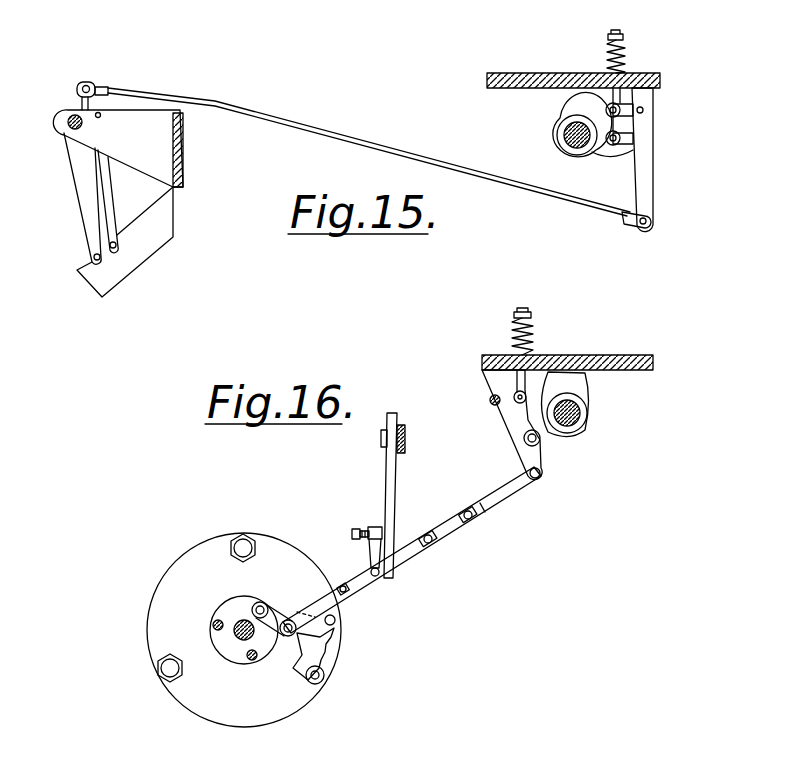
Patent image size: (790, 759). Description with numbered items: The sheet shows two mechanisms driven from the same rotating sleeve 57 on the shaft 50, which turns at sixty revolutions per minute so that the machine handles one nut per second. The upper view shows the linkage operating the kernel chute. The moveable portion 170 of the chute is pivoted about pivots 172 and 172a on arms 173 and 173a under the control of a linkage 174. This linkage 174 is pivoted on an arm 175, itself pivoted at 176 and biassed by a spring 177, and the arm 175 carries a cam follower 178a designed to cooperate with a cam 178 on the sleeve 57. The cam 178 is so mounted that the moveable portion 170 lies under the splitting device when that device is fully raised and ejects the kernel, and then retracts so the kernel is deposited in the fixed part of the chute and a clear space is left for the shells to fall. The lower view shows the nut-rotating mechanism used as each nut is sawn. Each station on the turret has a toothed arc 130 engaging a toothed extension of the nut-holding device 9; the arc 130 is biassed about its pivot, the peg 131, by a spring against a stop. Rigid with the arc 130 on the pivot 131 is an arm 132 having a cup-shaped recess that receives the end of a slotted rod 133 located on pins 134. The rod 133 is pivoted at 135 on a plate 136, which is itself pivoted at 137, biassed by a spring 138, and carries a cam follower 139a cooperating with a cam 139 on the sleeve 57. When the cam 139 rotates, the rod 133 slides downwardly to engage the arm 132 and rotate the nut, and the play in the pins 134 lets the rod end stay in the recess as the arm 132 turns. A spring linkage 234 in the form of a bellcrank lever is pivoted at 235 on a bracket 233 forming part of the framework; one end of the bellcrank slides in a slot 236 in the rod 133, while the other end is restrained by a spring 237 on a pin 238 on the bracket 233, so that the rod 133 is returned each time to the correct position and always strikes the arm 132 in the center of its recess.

In FIG. 15, the moveable portion of chute 170 is at (102, 277).
In FIG. 15, the pivot 172 is at (73, 118).
In FIG. 15, the pivot 172a is at (100, 114).
In FIG. 15, the arm 173 is at (85, 182).
In FIG. 15, the arm 173a is at (113, 207).
In FIG. 15, the linkage 174 is at (278, 123).
In FIG. 15, the arm 175 is at (647, 198).
In FIG. 15, the pivot 176 is at (643, 110).
In FIG. 15, the spring 177 is at (627, 55).
In FIG. 15, the cam 178 is at (598, 153).
In FIG. 15, the cam follower 178a is at (617, 150).
In FIG. 15, the shaft 50 is at (565, 128).
In FIG. 15, the sleeve 57 is at (560, 142).
In FIG. 16, the sleeve 57 is at (585, 423).
In FIG. 16, the spring 138 is at (535, 332).
In FIG. 16, the plate 136 is at (513, 430).
In FIG. 16, the pivot 137 is at (489, 401).
In FIG. 16, the cam 139 is at (583, 388).
In FIG. 16, the cam follower 139a is at (538, 443).
In FIG. 16, the pivot 135 is at (538, 478).
In FIG. 16, the slotted rod 133 is at (410, 550).
In FIG. 16, the pins 134 is at (470, 520).
In FIG. 16, the bracket 233 is at (391, 473).
In FIG. 16, the spring 237 is at (370, 527).
In FIG. 16, the pin 238 is at (353, 533).
In FIG. 16, the spring linkage 234 is at (366, 555).
In FIG. 16, the pivot 235 is at (377, 577).
In FIG. 16, the arm 132 is at (273, 622).
In FIG. 16, the peg 131 is at (262, 607).
In FIG. 16, the slot 236 is at (296, 630).
In FIG. 16, the toothed arc 130 is at (323, 635).
In FIG. 16, the nut-holding device 9 is at (325, 675).